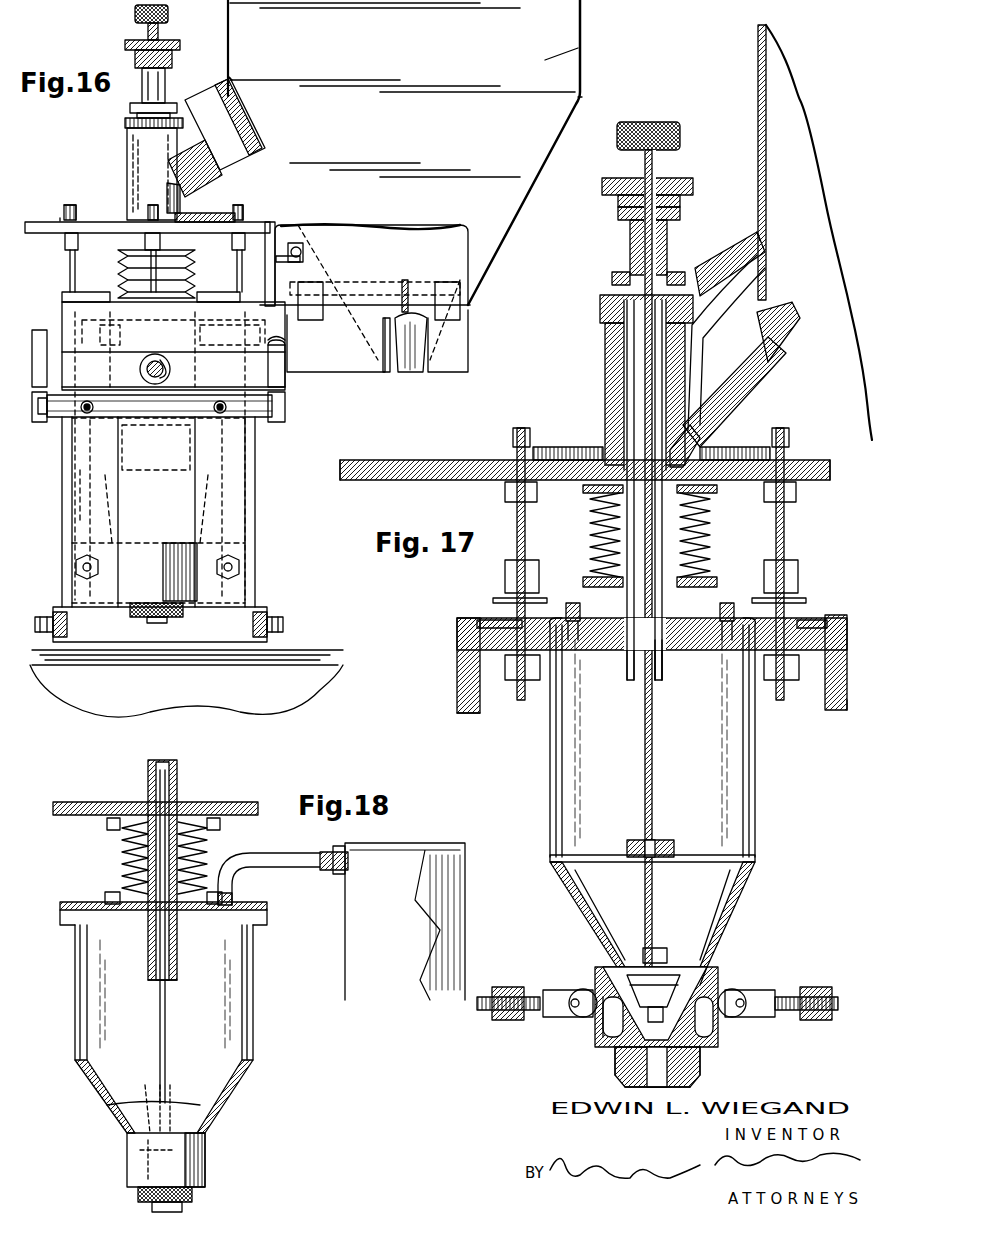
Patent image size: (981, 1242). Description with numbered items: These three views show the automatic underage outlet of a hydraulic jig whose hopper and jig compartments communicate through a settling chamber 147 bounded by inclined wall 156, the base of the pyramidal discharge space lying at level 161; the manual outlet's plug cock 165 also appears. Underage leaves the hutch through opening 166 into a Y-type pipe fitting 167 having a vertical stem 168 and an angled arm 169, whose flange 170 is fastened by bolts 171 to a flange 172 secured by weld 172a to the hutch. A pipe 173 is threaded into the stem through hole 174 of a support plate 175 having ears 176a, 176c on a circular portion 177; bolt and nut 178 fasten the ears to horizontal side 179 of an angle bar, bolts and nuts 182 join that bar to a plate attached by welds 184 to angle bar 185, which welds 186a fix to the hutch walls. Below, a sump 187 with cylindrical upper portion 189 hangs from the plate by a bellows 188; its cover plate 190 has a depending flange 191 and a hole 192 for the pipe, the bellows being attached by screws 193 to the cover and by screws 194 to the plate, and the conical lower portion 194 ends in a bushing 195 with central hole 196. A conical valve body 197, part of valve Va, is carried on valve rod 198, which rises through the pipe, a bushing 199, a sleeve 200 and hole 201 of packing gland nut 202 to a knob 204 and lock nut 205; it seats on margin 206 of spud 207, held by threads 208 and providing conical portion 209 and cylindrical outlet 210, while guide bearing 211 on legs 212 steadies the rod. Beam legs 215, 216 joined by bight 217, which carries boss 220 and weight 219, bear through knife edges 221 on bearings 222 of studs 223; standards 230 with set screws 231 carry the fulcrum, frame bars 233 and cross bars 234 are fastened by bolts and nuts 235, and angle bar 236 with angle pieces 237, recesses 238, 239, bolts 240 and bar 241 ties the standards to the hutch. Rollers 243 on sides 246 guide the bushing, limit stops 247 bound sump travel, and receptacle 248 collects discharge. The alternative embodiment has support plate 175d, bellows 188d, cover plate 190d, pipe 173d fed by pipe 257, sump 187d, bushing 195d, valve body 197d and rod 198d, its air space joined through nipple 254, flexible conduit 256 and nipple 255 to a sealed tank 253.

In FIG. 17, the settling chamber 147 is at (582, 24).
In FIG. 17, the wall 156 is at (588, 47).
In FIG. 17, the level 161 is at (582, 97).
In FIG. 16, the plug cock 165 is at (401, 372).
In FIG. 17, the opening 166 is at (792, 310).
In FIG. 16, the pipe fitting 167 is at (125, 155).
In FIG. 17, the pipe fitting 167 is at (605, 381).
In FIG. 16, the stem portion 168 is at (135, 183).
In FIG. 17, the stem portion 168 is at (606, 406).
In FIG. 16, the arm 169 is at (205, 168).
In FIG. 17, the arm 169 is at (718, 390).
In FIG. 16, the flange 170 is at (240, 148).
In FIG. 17, the flange 170 is at (770, 368).
In FIG. 16, the bolts 171 is at (197, 146).
In FIG. 16, the flange 172 is at (206, 95).
In FIG. 17, the flange 172 is at (718, 268).
In FIG. 16, the weld 172a is at (225, 78).
In FIG. 17, the weld 172a is at (757, 245).
In FIG. 17, the pipe 173 is at (628, 678).
In FIG. 18, the pipe 173d is at (178, 930).
In FIG. 17, the hole 174 is at (693, 466).
In FIG. 17, the support plate 175 is at (478, 462).
In FIG. 18, the support plate 175d is at (92, 800).
In FIG. 16, the ear 176a is at (268, 228).
In FIG. 17, the ear 176c is at (425, 482).
In FIG. 17, the circular portion 177 is at (820, 482).
In FIG. 16, the bolt and nut 178 is at (262, 222).
In FIG. 16, the horizontal side 179 is at (278, 240).
In FIG. 16, the bolts and nuts 182 is at (304, 254).
In FIG. 16, the welds 184 is at (300, 272).
In FIG. 16, the angle bar 185 is at (455, 250).
In FIG. 16, the welds 186a is at (432, 224).
In FIG. 16, the sump 187 is at (135, 517).
In FIG. 17, the sump 187 is at (757, 760).
In FIG. 18, the sump 187d is at (256, 993).
In FIG. 16, the flexible connection 188 is at (118, 256).
In FIG. 17, the flexible connection 188 is at (714, 560).
In FIG. 18, the flexible connection 188d is at (120, 856).
In FIG. 17, the cylindrical upper portion 189 is at (752, 786).
In FIG. 17, the cover plate 190 is at (553, 612).
In FIG. 18, the cover plate 190d is at (90, 904).
In FIG. 17, the depending circular flange 191 is at (748, 652).
In FIG. 17, the hole 192 is at (672, 642).
In FIG. 17, the screws 193 is at (573, 608).
In FIG. 17, the lower conical portion 194 is at (590, 527).
In FIG. 17, the bushing 195 is at (722, 975).
In FIG. 18, the bushing 195d is at (208, 1155).
In FIG. 17, the central hole 196 is at (605, 1022).
In FIG. 17, the conical valve body 197 is at (665, 950).
In FIG. 18, the valve body 197d is at (142, 1098).
In FIG. 16, the valve rod 198 is at (148, 31).
In FIG. 17, the valve rod 198 is at (655, 794).
In FIG. 18, the valve rod 198d is at (167, 1025).
In FIG. 17, the bushing 199 is at (603, 320).
In FIG. 17, the sleeve 200 is at (630, 252).
In FIG. 17, the hole 201 is at (615, 198).
In FIG. 16, the packing gland nut 202 is at (140, 62).
In FIG. 17, the packing gland nut 202 is at (620, 212).
In FIG. 16, the knob 204 is at (135, 14).
In FIG. 17, the knob 204 is at (652, 132).
In FIG. 16, the lock nut 205 is at (125, 45).
In FIG. 17, the lock nut 205 is at (605, 184).
In FIG. 17, the upper margin 206 is at (640, 968).
In FIG. 16, the spud 207 is at (153, 624).
In FIG. 17, the spud 207 is at (707, 1058).
In FIG. 17, the threads 208 is at (625, 1060).
In FIG. 17, the conical portion 209 is at (695, 1032).
In FIG. 17, the cylindrical outlet portion 210 is at (680, 1078).
In FIG. 17, the guide bearing 211 is at (672, 842).
In FIG. 17, the legs 212 is at (735, 852).
In FIG. 16, the leg 215 is at (35, 365).
In FIG. 17, the leg 215 is at (460, 700).
In FIG. 16, the leg 216 is at (282, 366).
In FIG. 17, the leg 216 is at (845, 705).
In FIG. 16, the bight 217 is at (256, 375).
In FIG. 16, the weight 219 is at (178, 372).
In FIG. 16, the boss 220 is at (147, 372).
In FIG. 17, the knife edges 221 is at (462, 650).
In FIG. 17, the knife edge bearings 222 is at (457, 644).
In FIG. 17, the studs 223 is at (482, 620).
In FIG. 16, the standards 230 is at (62, 528).
In FIG. 16, the set screws 231 is at (87, 413).
In FIG. 16, the bars 233 is at (58, 615).
In FIG. 16, the cross bars 234 is at (186, 635).
In FIG. 16, the bolts and nuts 235 is at (283, 612).
In FIG. 16, the angle bar 236 is at (470, 333).
In FIG. 16, the welded angle pieces 237 is at (85, 300).
In FIG. 16, the recess 238 is at (418, 374).
In FIG. 16, the recess 239 is at (288, 350).
In FIG. 16, the bolts 240 is at (318, 320).
In FIG. 16, the bar 241 is at (375, 292).
In FIG. 17, the rollers 243 is at (565, 985).
In FIG. 16, the sides 246 is at (198, 490).
In FIG. 17, the limit stops 247 is at (500, 590).
In FIG. 16, the receptacle 248 is at (305, 692).
In FIG. 18, the sealed tank 253 is at (465, 910).
In FIG. 18, the nipple 254 is at (240, 895).
In FIG. 18, the nipple 255 is at (330, 850).
In FIG. 18, the flexible conduit 256 is at (292, 855).
In FIG. 18, the pipe 257 is at (178, 766).
In FIG. 17, the valve Va is at (718, 948).